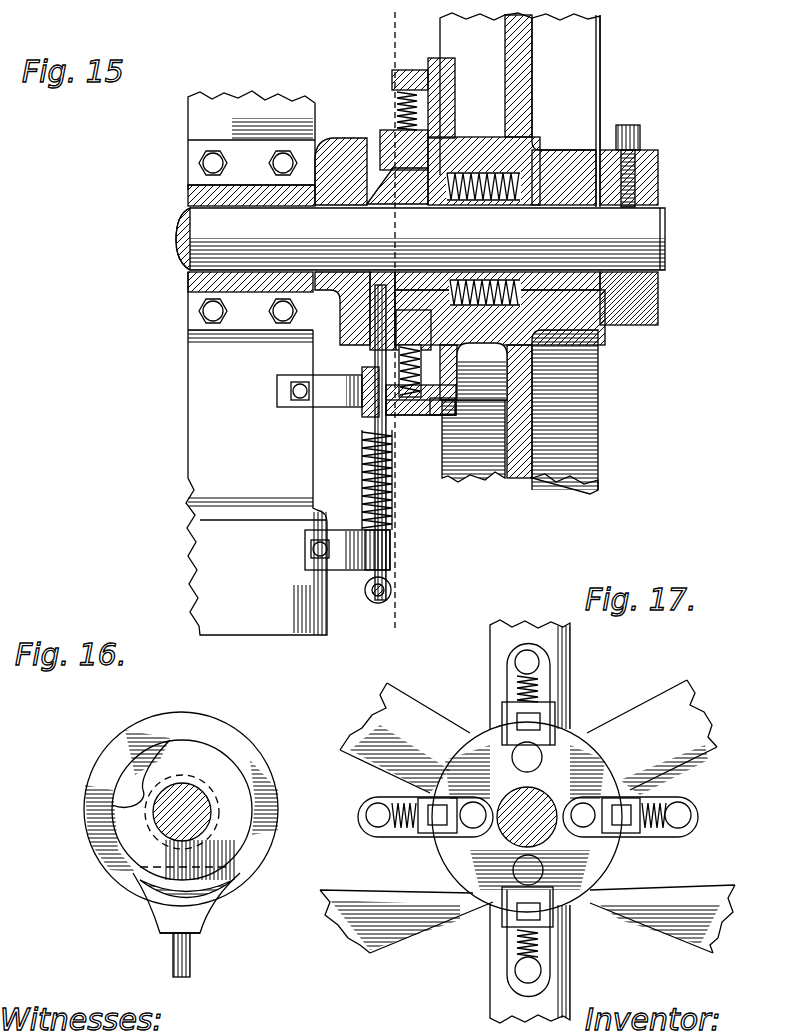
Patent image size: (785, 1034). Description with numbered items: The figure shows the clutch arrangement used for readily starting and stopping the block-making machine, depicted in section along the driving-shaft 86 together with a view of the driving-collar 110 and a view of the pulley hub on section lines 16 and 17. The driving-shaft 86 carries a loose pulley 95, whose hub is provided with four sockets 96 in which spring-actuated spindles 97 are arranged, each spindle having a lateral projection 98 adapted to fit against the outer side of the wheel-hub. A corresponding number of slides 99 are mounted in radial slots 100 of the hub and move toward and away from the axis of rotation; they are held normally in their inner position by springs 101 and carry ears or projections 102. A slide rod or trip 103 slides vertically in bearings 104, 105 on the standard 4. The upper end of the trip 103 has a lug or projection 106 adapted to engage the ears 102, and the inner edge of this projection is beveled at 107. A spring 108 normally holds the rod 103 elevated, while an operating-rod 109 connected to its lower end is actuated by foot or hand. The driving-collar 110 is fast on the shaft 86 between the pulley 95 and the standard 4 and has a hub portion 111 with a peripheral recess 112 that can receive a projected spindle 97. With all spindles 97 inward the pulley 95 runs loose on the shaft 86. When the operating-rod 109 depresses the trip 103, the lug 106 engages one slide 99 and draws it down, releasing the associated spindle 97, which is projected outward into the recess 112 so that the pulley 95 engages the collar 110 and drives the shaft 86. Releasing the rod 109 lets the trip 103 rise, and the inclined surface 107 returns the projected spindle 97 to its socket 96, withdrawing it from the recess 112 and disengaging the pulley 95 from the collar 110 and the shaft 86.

In FIG. 15, the standard 4 is at (200, 120).
In FIG. 15, the section line 16- 16 is at (428, 48).
In FIG. 15, the section line 17- 17 is at (391, 40).
In FIG. 15, the driving-shaft 86 is at (178, 252).
In FIG. 15, the loose pulley 95 is at (590, 372).
In FIG. 15, the socket 96 is at (520, 325).
In FIG. 15, the spring-actuated spindle 97 is at (445, 185).
In FIG. 17, the spring-actuated spindle 97 is at (590, 800).
In FIG. 15, the lateral projection 98 is at (484, 146).
In FIG. 15, the slide 99 is at (397, 128).
In FIG. 17, the radial slot 100 is at (597, 800).
In FIG. 15, the spring 101 is at (393, 108).
In FIG. 15, the ear 102 is at (382, 156).
In FIG. 15, the slide rod or trip 103 is at (381, 412).
In FIG. 16, the slide rod or trip 103 is at (190, 957).
In FIG. 15, the bearing 104 is at (335, 390).
In FIG. 15, the bearing 105 is at (343, 532).
In FIG. 15, the lug or projection 106 is at (367, 310).
In FIG. 16, the lug or projection 106 is at (203, 892).
In FIG. 15, the beveled inner edge 107 is at (380, 283).
In FIG. 16, the beveled inner edge 107 is at (137, 877).
In FIG. 15, the spring 108 is at (390, 490).
In FIG. 15, the operating-rod 109 is at (393, 588).
In FIG. 15, the driving-collar 110 is at (330, 140).
In FIG. 16, the driving-collar 110 is at (217, 724).
In FIG. 15, the hub portion 111 is at (372, 196).
In FIG. 16, the hub portion 111 is at (232, 780).
In FIG. 16, the peripheral recess 112 is at (143, 785).